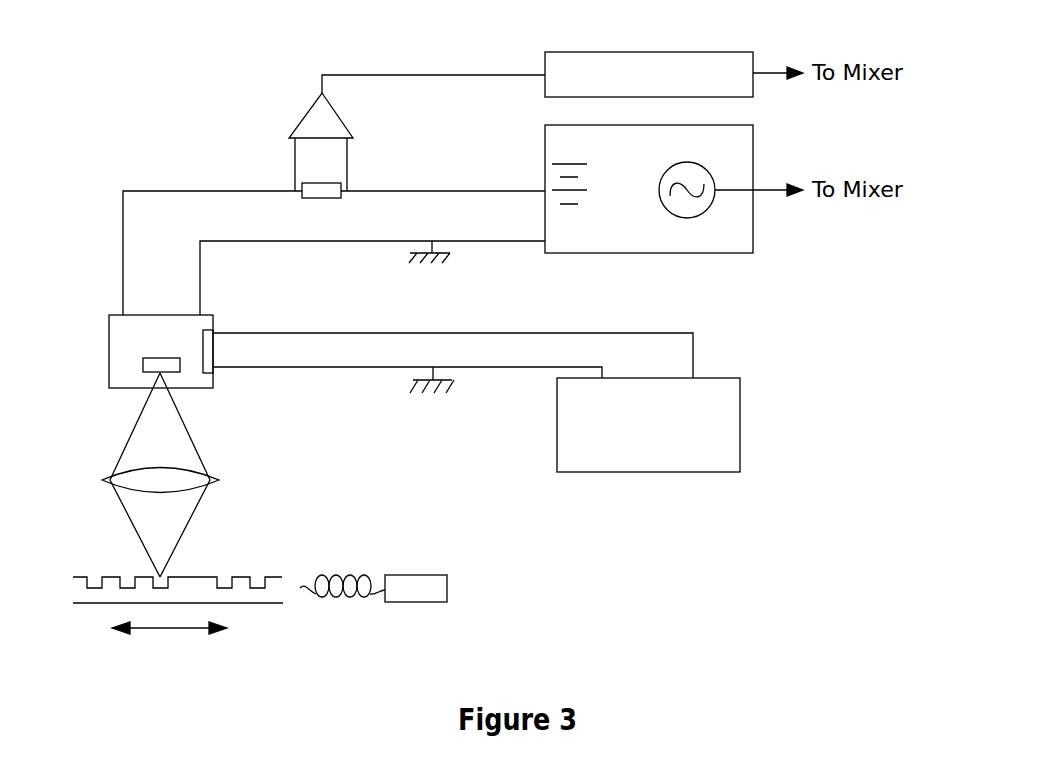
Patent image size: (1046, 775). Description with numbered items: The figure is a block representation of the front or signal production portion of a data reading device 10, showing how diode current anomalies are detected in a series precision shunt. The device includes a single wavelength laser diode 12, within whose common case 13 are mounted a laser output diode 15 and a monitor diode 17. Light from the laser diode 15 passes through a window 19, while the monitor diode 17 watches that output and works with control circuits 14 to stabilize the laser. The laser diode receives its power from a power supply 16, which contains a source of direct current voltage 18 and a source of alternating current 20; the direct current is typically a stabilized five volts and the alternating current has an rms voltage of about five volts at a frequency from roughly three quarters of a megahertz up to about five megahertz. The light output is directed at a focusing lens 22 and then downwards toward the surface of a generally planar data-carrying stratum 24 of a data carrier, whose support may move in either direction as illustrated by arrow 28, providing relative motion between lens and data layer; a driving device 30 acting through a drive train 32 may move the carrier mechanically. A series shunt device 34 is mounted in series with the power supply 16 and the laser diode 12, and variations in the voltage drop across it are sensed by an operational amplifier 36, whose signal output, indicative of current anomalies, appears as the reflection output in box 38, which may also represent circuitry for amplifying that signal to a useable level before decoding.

The data reading device 10 is at (730, 512).
The single wavelength laser diode 12 is at (109, 348).
The common case 13 is at (173, 392).
The control circuits 14 is at (577, 433).
The laser output diode 15 is at (152, 362).
The power supply 16 is at (628, 253).
The monitor diode 17 is at (207, 330).
The source of direct current voltage 18 is at (569, 164).
The window 19 is at (147, 392).
The source of alternating current 20 is at (707, 167).
The focusing lens 22 is at (190, 478).
The data-carrying stratum 24 is at (240, 577).
The arrow 28 is at (177, 629).
The driving device 30 is at (402, 587).
The drive train 32 is at (330, 578).
The series shunt device 34 is at (333, 196).
The operational amplifier 36 is at (330, 128).
The reflection output box 38 is at (553, 60).